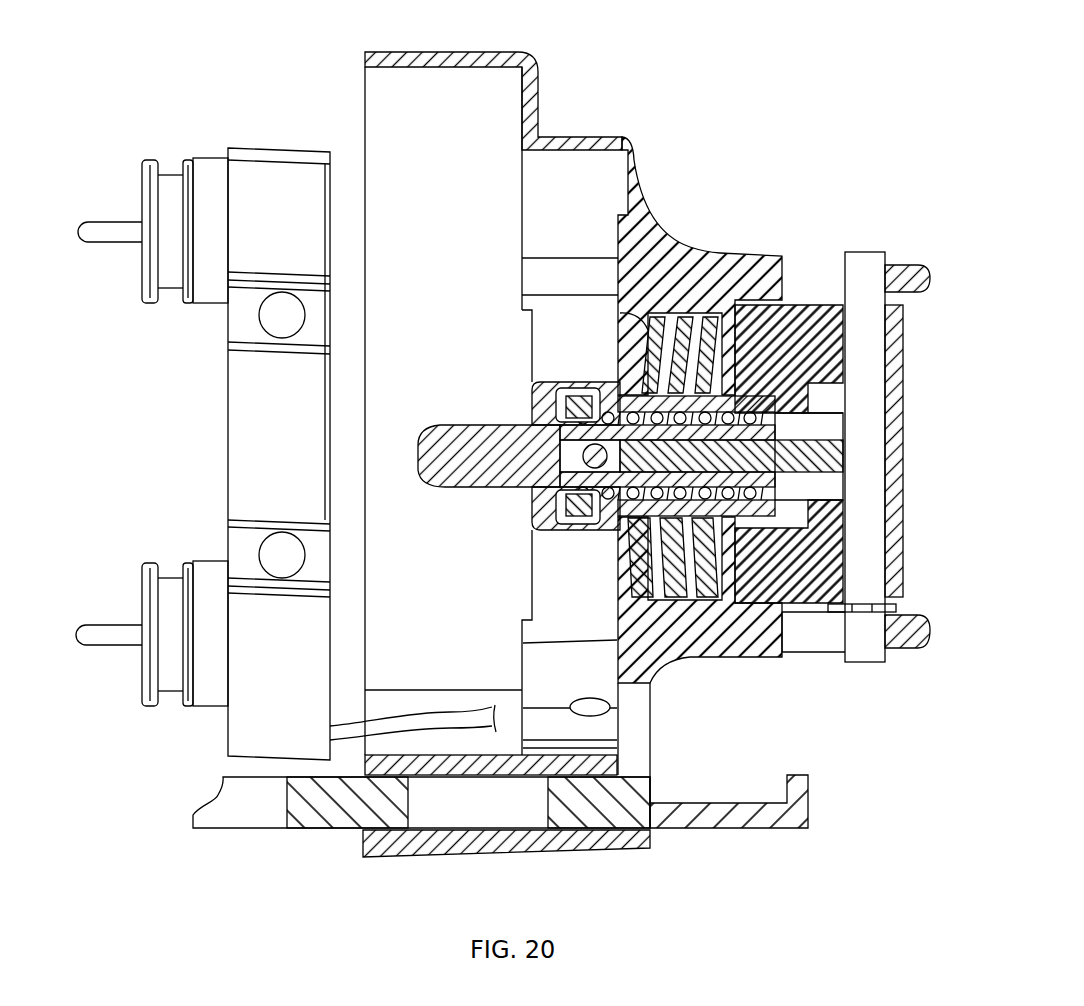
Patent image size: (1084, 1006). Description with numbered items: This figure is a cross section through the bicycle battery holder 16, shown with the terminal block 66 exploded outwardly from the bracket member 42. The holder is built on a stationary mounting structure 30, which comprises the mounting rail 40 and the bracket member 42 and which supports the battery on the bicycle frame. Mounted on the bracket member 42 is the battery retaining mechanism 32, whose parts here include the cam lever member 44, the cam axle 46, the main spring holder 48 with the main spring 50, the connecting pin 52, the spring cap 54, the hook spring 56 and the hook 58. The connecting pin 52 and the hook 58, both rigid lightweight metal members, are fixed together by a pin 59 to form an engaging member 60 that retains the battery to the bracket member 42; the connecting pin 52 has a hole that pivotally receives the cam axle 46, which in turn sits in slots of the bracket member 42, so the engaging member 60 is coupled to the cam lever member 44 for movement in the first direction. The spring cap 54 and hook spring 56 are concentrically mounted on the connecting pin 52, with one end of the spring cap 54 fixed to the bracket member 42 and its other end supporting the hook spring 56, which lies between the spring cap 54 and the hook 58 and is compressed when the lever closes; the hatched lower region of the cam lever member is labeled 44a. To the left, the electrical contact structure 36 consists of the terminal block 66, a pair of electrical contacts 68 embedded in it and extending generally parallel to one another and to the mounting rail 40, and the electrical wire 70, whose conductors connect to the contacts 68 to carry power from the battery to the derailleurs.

The bicycle battery holder 16 is at (782, 78).
The stationary mounting structure 30 is at (380, 892).
The battery retaining mechanism 32 is at (810, 655).
The electrical contact structure 36 is at (240, 92).
The mounting rail 40 is at (322, 829).
The bracket member 42 is at (400, 858).
The cam lever member 44 is at (802, 330).
The bushing lower portion 44a is at (758, 583).
The cam axle 46 is at (860, 252).
The main spring holder 48 is at (706, 313).
The main spring 50 is at (640, 332).
The connecting pin 52 is at (795, 445).
The spring cap 54 is at (593, 530).
The hook spring 56 is at (608, 400).
The hook 58 is at (455, 425).
The pin 59 is at (582, 457).
The engaging member 60 is at (515, 497).
The terminal block 66 is at (278, 150).
The electrical contacts 68 is at (108, 244).
The electrical wire 70 is at (442, 718).